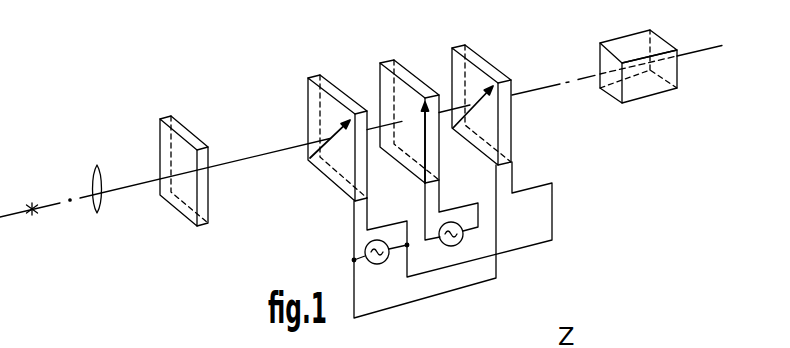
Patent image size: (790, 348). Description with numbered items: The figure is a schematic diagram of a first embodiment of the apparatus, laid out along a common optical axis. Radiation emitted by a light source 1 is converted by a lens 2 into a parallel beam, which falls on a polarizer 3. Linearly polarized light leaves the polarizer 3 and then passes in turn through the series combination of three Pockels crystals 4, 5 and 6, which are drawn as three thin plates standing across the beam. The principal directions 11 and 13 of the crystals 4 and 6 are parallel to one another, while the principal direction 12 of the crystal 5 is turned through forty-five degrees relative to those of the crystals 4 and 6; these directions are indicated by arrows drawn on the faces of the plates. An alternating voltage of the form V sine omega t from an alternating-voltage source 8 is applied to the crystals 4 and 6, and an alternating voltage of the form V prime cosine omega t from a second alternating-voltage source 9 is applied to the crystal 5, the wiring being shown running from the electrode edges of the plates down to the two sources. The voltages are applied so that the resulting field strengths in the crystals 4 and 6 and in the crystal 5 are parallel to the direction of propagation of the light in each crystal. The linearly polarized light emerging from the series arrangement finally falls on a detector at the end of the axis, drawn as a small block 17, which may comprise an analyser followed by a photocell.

The light source 1 is at (33, 215).
The lens 2 is at (93, 214).
The polarizer 3 is at (173, 211).
The Pockels crystal 4 is at (327, 183).
The Pockels crystal 5 is at (410, 172).
The Pockels crystal 6 is at (483, 154).
The alternating-voltage source 8 is at (377, 265).
The alternating-voltage source 9 is at (442, 244).
The principal direction 11 is at (340, 138).
The principal direction 12 is at (428, 145).
The principal direction 13 is at (470, 106).
The detector 17 is at (657, 94).